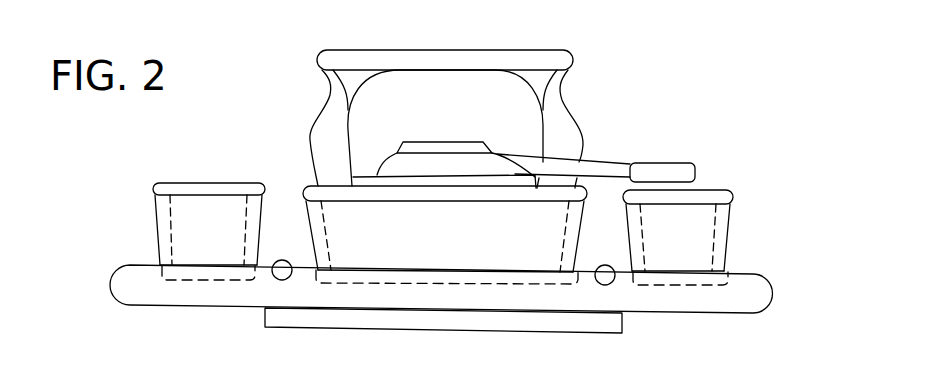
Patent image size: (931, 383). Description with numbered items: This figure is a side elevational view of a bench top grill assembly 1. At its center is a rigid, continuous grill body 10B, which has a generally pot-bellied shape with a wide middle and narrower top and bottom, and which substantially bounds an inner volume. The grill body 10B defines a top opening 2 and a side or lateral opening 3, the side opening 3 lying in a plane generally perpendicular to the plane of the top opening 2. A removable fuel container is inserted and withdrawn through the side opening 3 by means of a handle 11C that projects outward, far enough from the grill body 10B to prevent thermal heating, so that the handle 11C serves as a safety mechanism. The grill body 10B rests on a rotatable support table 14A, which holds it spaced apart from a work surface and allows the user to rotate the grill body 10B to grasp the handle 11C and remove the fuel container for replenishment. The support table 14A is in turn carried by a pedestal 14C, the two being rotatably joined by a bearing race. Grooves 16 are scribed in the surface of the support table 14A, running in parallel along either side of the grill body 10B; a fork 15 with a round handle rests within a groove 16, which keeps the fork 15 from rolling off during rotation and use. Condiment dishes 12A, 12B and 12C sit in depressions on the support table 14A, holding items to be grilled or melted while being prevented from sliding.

The bench top grill assembly 1 is at (612, 89).
The top opening 2 is at (512, 60).
The side opening 3 is at (393, 100).
The grill body 10B is at (311, 133).
The handle 11C is at (590, 170).
The condiment dish 12A is at (165, 225).
The condiment dish 12B is at (732, 192).
The condiment dish 12C is at (462, 250).
The rotatable support table 14A is at (758, 292).
The pedestal 14C is at (605, 318).
The fork 15 is at (282, 260).
The groove 16 is at (273, 278).